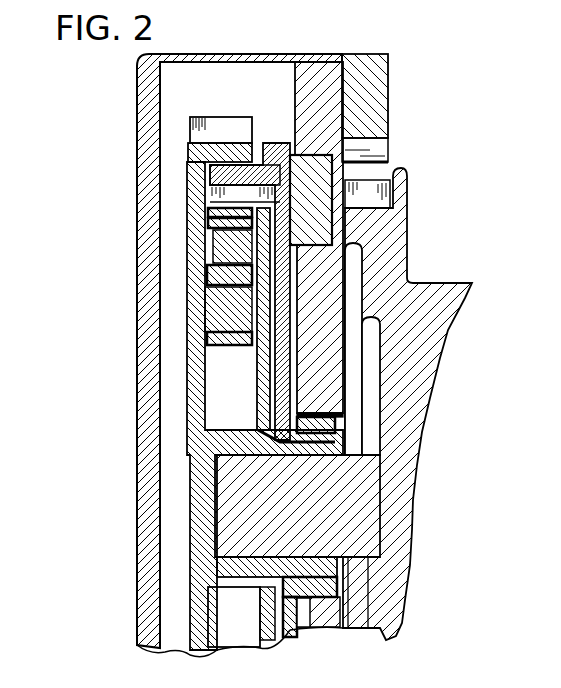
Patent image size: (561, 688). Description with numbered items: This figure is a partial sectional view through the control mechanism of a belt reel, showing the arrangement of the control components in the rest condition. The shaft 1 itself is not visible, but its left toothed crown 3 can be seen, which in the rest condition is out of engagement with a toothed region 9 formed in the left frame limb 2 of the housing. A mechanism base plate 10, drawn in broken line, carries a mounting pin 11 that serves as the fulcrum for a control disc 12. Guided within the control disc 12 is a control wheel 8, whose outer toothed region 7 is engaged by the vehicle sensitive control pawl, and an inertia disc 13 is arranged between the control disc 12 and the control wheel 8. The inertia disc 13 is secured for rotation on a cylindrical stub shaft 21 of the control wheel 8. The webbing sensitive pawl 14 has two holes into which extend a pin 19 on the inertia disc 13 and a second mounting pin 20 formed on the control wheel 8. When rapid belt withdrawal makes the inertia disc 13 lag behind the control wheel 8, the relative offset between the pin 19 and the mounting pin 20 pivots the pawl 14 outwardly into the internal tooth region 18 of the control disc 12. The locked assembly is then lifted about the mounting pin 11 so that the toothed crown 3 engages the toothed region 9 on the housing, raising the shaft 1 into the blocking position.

The shaft 1 is at (431, 270).
The left frame limb 2 is at (372, 94).
The left toothed crown 3 is at (387, 192).
The outer toothed region 7 is at (190, 133).
The control wheel 8 is at (207, 330).
The toothed region 9 is at (345, 163).
The mechanism base plate 10 is at (312, 72).
The mounting pin 11 is at (343, 160).
The control disc 12 is at (258, 355).
The inertia disc 13 is at (255, 407).
The webbing sensitive pawl 14 is at (207, 280).
The internal tooth region 18 is at (208, 187).
The pin 19 is at (210, 250).
The mounting pin 20 is at (207, 345).
The cylindrical stub shaft 21 is at (237, 578).